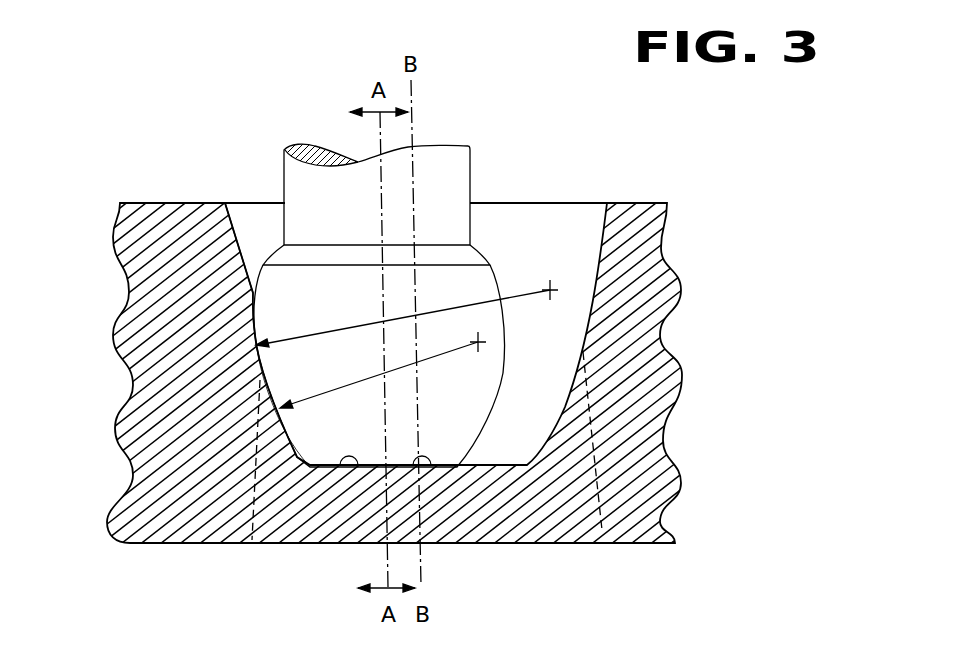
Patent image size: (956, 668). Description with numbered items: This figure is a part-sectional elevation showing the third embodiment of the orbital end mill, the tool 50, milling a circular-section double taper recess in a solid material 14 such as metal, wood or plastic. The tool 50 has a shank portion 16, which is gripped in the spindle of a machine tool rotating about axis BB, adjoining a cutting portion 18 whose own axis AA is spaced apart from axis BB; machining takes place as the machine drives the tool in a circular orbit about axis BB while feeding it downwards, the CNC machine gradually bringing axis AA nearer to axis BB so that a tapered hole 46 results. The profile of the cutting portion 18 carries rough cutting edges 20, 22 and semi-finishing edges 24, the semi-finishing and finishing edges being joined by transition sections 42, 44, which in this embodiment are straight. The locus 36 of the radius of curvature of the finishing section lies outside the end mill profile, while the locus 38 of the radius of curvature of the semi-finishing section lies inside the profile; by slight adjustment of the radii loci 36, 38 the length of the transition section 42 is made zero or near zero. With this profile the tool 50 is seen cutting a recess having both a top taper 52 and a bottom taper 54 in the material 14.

The solid material 14 is at (173, 228).
The shank portion 16 is at (283, 149).
The cutting portion 18 is at (500, 401).
The rough cutting edge 20 is at (340, 468).
The rough cutting edge 22 is at (452, 467).
The semi-finishing edge 24 is at (295, 457).
The locus of the radius of curvature for the finishing section 36 is at (552, 283).
The locus of the radius of curvature for the semi-finishing section 38 is at (484, 338).
The transition section 42 is at (274, 363).
The transition section 44 is at (275, 466).
The tapered hole 46 is at (254, 318).
The tool 50 is at (514, 153).
The top taper 52 is at (233, 230).
The bottom taper 54 is at (594, 498).